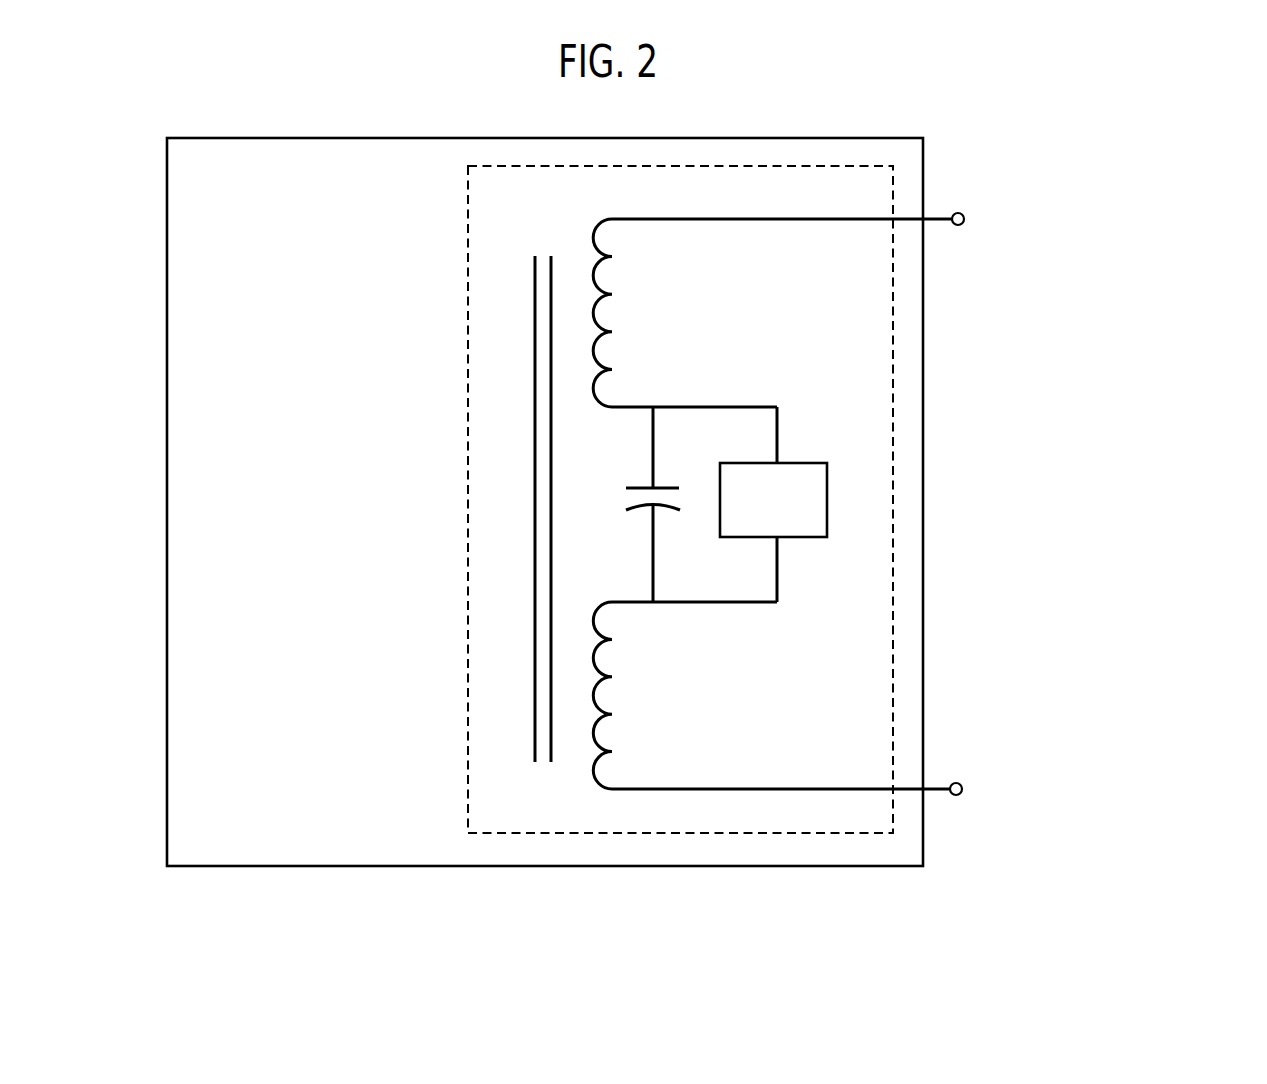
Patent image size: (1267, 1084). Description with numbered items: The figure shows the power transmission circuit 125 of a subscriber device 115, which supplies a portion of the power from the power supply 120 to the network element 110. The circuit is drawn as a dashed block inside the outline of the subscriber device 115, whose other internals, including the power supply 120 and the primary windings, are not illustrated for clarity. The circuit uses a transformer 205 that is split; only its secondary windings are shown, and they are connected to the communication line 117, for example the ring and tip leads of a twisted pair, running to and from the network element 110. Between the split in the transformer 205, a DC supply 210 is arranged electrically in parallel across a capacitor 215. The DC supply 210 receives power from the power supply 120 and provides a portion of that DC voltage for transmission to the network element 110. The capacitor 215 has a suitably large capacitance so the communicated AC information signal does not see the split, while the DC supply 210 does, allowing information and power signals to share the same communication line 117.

The subscriber device 115 is at (545, 467).
The power supply 120 is at (319, 535).
The power transmission circuit 125 is at (468, 243).
The transformer 205 is at (612, 294).
The DC supply 210 is at (790, 537).
The capacitor 215 is at (628, 508).
The communication line 117 is at (934, 506).
The network element 110 is at (1111, 537).